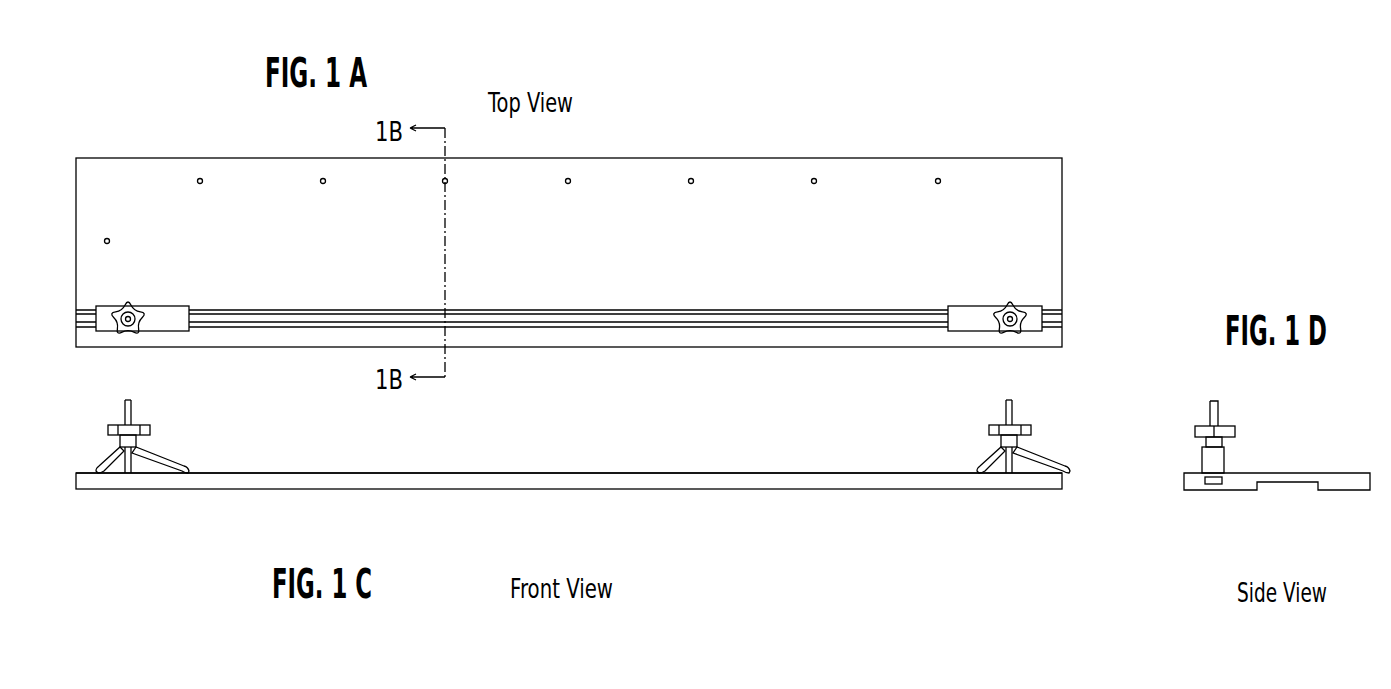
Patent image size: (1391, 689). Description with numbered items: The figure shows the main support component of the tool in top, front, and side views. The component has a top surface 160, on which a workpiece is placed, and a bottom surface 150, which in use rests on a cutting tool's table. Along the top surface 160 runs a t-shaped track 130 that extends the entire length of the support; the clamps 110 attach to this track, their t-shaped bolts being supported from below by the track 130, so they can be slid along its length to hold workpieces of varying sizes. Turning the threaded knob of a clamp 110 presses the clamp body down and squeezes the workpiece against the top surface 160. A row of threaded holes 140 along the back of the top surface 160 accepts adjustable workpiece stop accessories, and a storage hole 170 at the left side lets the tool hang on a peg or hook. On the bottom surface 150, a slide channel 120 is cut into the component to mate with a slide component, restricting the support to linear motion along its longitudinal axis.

In FIG. 1C, the clamp 110 is at (150, 428).
In FIG. 1D, the slide channel 120 is at (1296, 483).
In FIG. 1A, the t-shaped track 130 is at (1062, 322).
In FIG. 1A, the threaded holes 140 is at (941, 178).
In FIG. 1C, the bottom surface 150 is at (760, 489).
In FIG. 1C, the top surface 160 is at (601, 473).
In FIG. 1A, the storage hole 170 is at (110, 237).